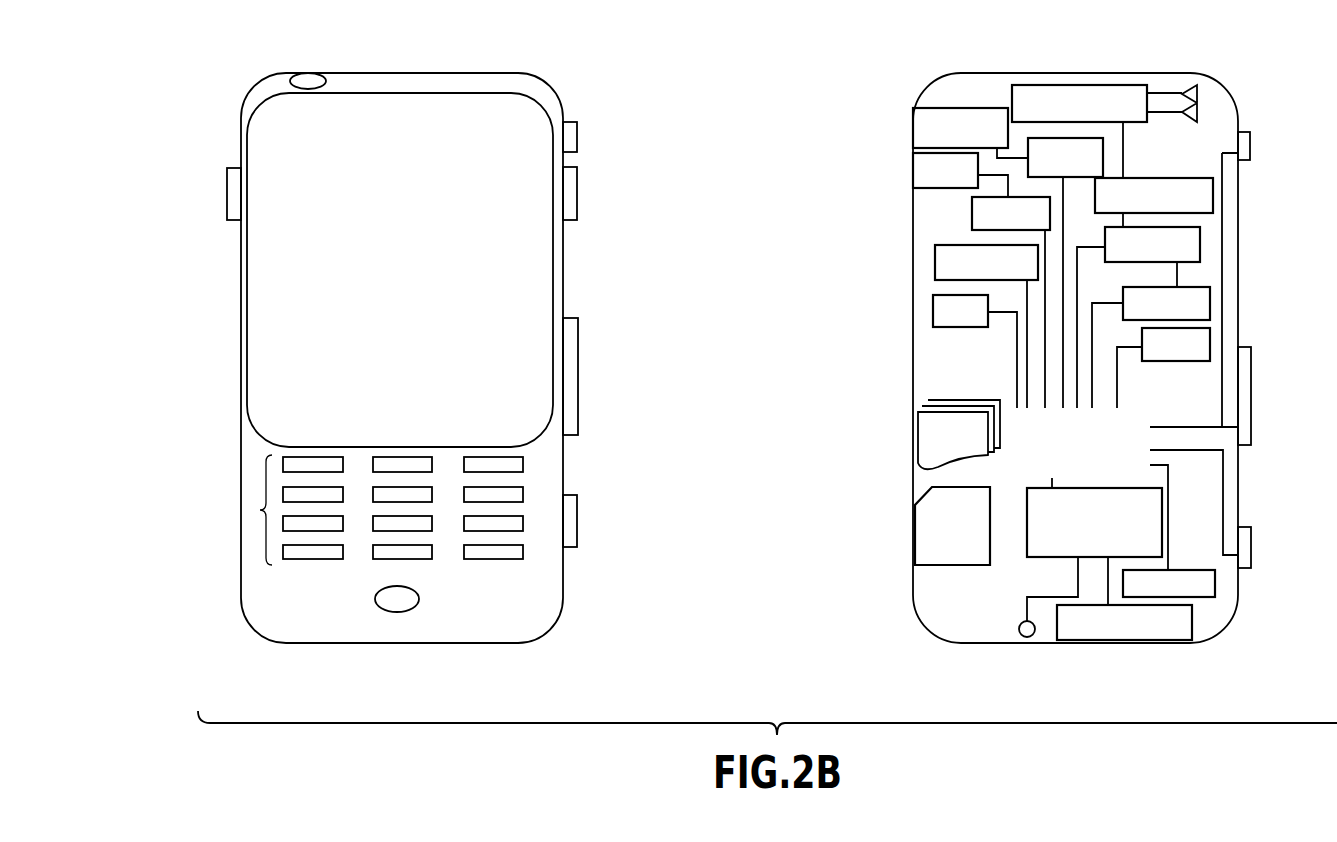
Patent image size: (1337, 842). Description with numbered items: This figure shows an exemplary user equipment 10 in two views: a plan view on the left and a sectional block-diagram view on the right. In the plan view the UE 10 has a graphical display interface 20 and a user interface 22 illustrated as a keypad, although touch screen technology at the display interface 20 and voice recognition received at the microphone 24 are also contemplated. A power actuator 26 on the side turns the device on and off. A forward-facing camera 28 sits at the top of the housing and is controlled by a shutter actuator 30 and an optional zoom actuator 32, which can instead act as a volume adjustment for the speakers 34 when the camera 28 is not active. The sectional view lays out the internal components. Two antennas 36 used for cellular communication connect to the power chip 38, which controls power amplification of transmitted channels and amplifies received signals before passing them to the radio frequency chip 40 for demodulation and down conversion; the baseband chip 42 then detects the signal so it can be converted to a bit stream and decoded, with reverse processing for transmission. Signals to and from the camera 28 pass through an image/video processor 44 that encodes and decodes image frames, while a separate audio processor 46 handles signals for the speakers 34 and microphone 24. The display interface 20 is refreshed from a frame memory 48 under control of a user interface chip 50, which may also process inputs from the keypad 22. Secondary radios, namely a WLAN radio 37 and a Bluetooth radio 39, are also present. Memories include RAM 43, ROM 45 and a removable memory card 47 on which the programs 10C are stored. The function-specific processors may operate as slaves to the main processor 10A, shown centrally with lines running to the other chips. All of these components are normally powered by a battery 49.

The user equipment 10 is at (557, 678).
The main processor 10A is at (1013, 412).
The programs 10C is at (925, 446).
The graphical display interface 20 is at (273, 287).
The user interface 22 is at (260, 510).
The microphone 24 is at (399, 602).
The power actuator 26 is at (573, 133).
The camera 28 is at (313, 76).
The shutter actuator 30 is at (573, 515).
The side button 32 is at (573, 359).
The speaker 34 is at (233, 172).
The antennas 36 is at (1200, 82).
The wireless local area network radio 37 is at (940, 272).
The power chip 38 is at (1072, 86).
The Bluetooth radio 39 is at (940, 313).
The radio frequency chip 40 is at (1205, 206).
The baseband chip 42 is at (1195, 250).
The random access memory 43 is at (1205, 308).
The image/video processor 44 is at (1098, 173).
The read only memory 45 is at (1205, 345).
The audio processor 46 is at (975, 220).
The memory card 47 is at (922, 512).
The frame memory 48 is at (1122, 641).
The battery 49 is at (1212, 593).
The user interface chip 50 is at (1050, 548).